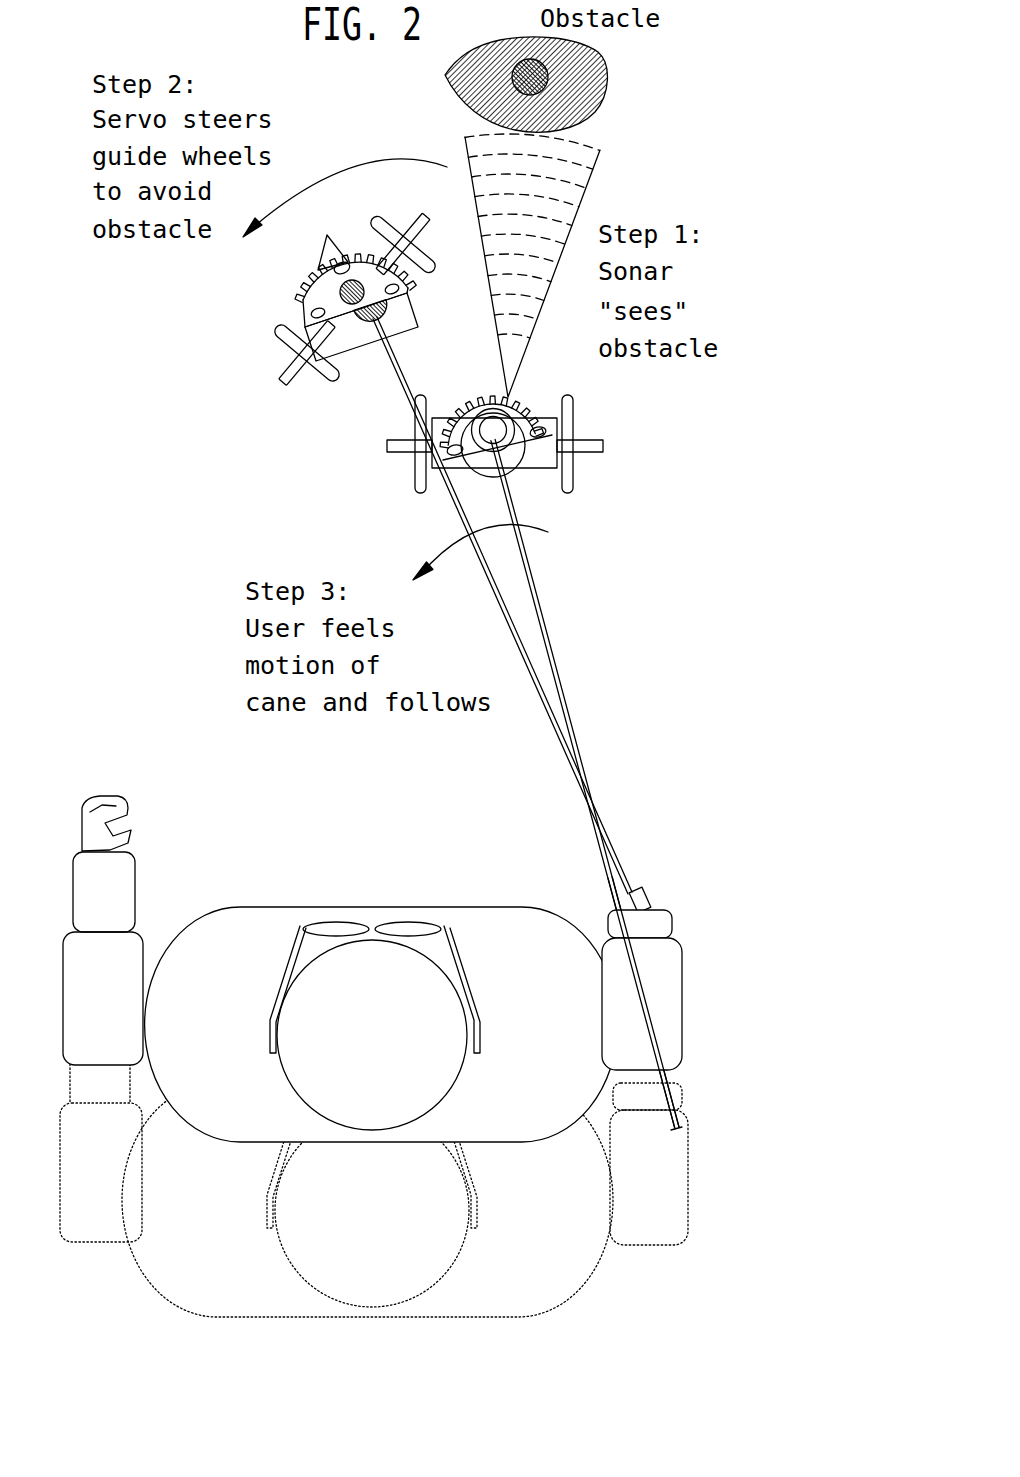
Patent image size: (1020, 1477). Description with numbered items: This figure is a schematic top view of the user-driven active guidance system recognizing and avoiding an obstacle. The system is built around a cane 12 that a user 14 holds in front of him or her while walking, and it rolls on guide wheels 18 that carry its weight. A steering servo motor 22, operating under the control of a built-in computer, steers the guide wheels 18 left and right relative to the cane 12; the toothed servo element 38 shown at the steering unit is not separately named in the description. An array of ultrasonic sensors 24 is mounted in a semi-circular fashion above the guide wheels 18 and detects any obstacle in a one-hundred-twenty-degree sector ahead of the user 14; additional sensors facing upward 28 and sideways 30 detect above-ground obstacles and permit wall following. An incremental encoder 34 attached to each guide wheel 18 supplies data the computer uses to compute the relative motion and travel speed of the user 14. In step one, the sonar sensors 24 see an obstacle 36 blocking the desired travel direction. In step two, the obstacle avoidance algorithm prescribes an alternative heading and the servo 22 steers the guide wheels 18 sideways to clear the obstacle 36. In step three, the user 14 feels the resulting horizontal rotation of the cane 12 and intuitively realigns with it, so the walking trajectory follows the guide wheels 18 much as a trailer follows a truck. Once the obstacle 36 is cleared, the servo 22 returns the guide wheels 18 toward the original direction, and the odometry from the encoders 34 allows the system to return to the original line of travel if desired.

The cane 12 is at (535, 692).
The user 14 is at (233, 918).
The guide wheels 18 is at (380, 213).
The steering servo motor 22 is at (377, 320).
The ultrasonic sensors 24 is at (329, 244).
The upward facing sensors 28 is at (396, 299).
The sideways facing sensors 30 is at (300, 316).
The incremental encoder 34 is at (425, 250).
The obstacle 36 is at (607, 97).
The servo gear teeth 38 is at (310, 266).